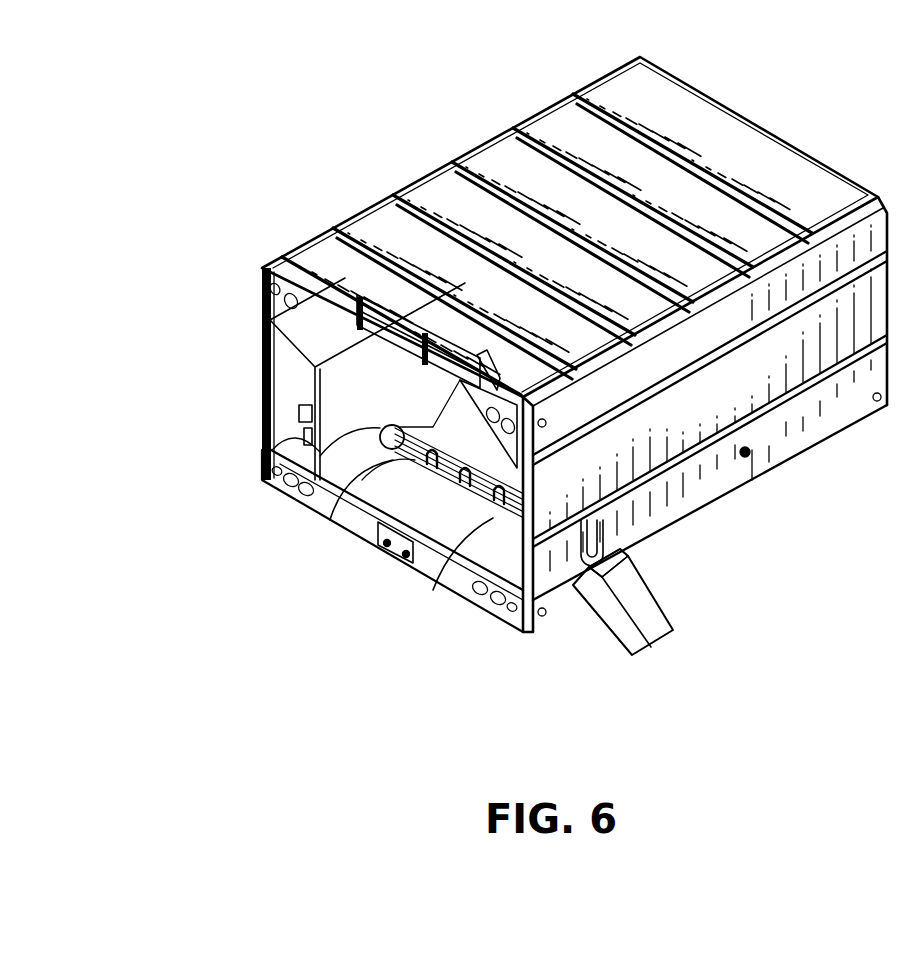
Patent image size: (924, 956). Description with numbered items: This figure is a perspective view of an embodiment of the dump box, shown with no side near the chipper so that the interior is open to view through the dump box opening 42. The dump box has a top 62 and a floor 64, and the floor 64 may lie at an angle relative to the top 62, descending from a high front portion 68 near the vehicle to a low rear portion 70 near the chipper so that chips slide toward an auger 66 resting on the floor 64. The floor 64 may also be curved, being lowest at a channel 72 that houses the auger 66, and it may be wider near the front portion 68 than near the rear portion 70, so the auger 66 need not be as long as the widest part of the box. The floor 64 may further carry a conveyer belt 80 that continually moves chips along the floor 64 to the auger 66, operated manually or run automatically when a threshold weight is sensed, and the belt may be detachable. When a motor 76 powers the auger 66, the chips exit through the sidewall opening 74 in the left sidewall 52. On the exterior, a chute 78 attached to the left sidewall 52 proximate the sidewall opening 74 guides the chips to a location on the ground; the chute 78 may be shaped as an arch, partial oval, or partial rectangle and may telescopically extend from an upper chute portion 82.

The dump box opening 42 is at (241, 386).
The left sidewall 52 is at (823, 407).
The top 62 is at (795, 160).
The floor 64 is at (395, 558).
The auger 66 is at (397, 452).
The front portion 68 is at (879, 174).
The rear portion 70 is at (481, 624).
The channel 72 is at (433, 590).
The sidewall opening 74 is at (580, 567).
The motor 76 is at (262, 458).
The chute 78 is at (663, 618).
The conveyer belt 80 is at (480, 467).
The upper chute portion 82 is at (630, 553).